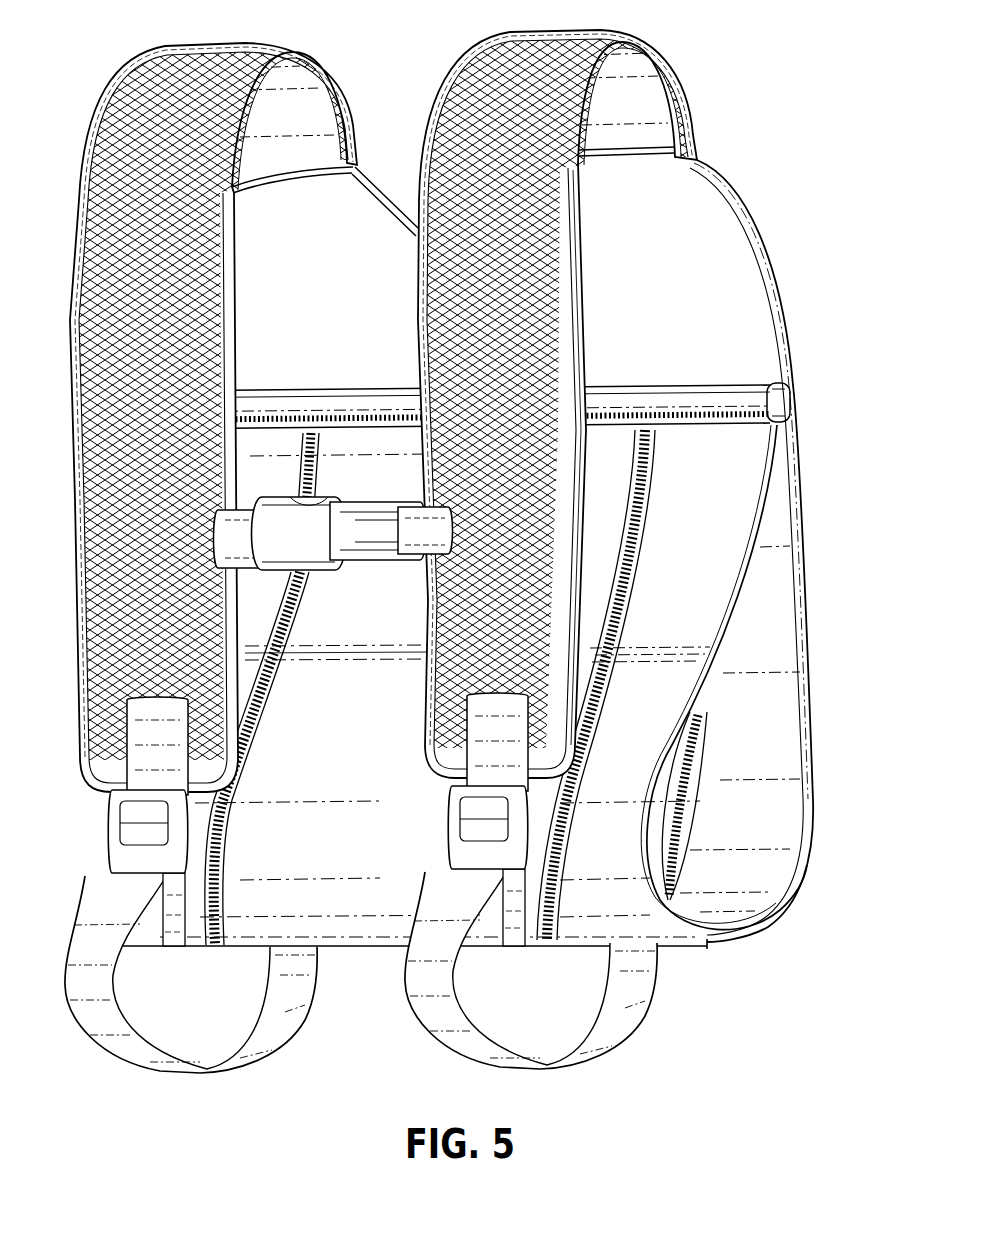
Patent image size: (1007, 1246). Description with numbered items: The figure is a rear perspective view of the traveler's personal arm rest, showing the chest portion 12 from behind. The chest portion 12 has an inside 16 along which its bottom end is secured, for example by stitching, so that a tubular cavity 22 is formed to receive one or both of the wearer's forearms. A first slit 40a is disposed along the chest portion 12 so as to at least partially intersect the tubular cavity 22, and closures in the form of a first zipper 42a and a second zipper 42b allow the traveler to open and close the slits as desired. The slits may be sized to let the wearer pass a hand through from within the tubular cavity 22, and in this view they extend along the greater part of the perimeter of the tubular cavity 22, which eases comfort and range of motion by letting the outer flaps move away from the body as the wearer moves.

The chest portion 12 is at (503, 623).
The inside 16 is at (661, 359).
The tubular cavity 22 is at (750, 677).
The first slit 40a is at (686, 755).
The first zipper 42a is at (551, 887).
The second zipper 42b is at (218, 862).